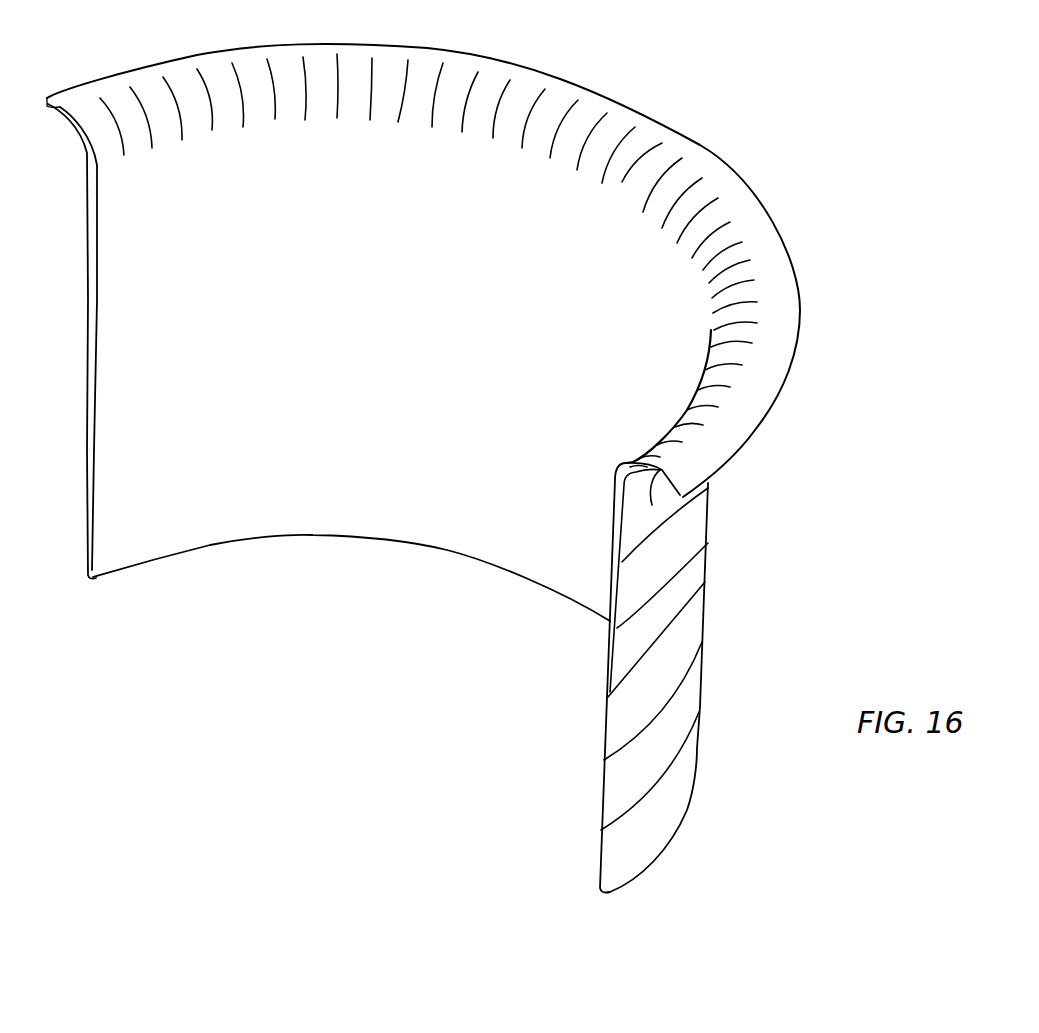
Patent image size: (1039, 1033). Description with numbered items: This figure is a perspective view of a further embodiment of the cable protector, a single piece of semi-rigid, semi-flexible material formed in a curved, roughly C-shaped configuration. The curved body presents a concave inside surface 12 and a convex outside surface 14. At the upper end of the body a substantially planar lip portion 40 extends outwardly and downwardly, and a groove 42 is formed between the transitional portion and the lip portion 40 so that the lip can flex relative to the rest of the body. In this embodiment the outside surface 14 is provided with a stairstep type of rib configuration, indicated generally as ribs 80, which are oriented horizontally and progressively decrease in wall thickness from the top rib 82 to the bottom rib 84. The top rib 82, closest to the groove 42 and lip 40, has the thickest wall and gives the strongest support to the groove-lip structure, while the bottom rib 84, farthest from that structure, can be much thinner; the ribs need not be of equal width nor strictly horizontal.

The inside surface 12 is at (357, 516).
The outside surface 14 is at (800, 578).
The lip portion 40 is at (780, 388).
The groove 42 is at (646, 497).
The ribs 80 is at (666, 678).
The top rib 82 is at (623, 530).
The bottom rib 84 is at (697, 748).